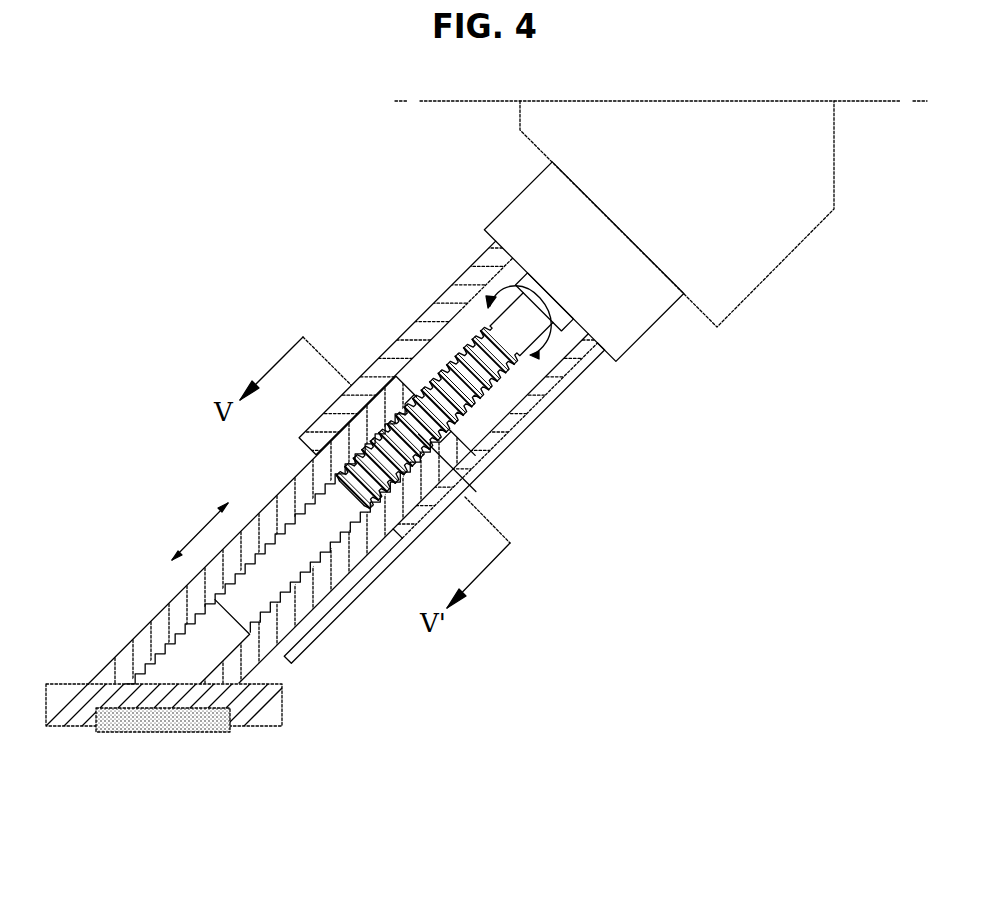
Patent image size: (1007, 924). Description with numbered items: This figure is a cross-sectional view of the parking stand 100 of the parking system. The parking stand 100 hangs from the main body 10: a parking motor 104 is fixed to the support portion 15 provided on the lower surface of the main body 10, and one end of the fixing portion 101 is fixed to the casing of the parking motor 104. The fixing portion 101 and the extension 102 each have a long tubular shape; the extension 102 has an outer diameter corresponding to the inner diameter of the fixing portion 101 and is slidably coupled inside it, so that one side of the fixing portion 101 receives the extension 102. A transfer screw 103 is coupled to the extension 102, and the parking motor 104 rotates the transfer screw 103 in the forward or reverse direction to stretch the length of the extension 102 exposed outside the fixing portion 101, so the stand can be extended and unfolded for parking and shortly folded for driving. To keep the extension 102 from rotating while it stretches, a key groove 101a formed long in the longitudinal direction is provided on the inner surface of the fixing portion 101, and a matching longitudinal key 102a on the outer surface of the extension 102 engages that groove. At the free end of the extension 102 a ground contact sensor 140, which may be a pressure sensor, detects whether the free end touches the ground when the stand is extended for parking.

The main body 10 is at (455, 103).
The support portion 15 is at (818, 167).
The parking stand 100 is at (553, 433).
The fixing portion 101 is at (450, 290).
The key groove 101a is at (500, 440).
The extension 102 is at (163, 613).
The key 102a is at (306, 626).
The transfer screw 103 is at (437, 370).
The parking motor 104 is at (632, 325).
The ground contact sensor 140 is at (192, 733).